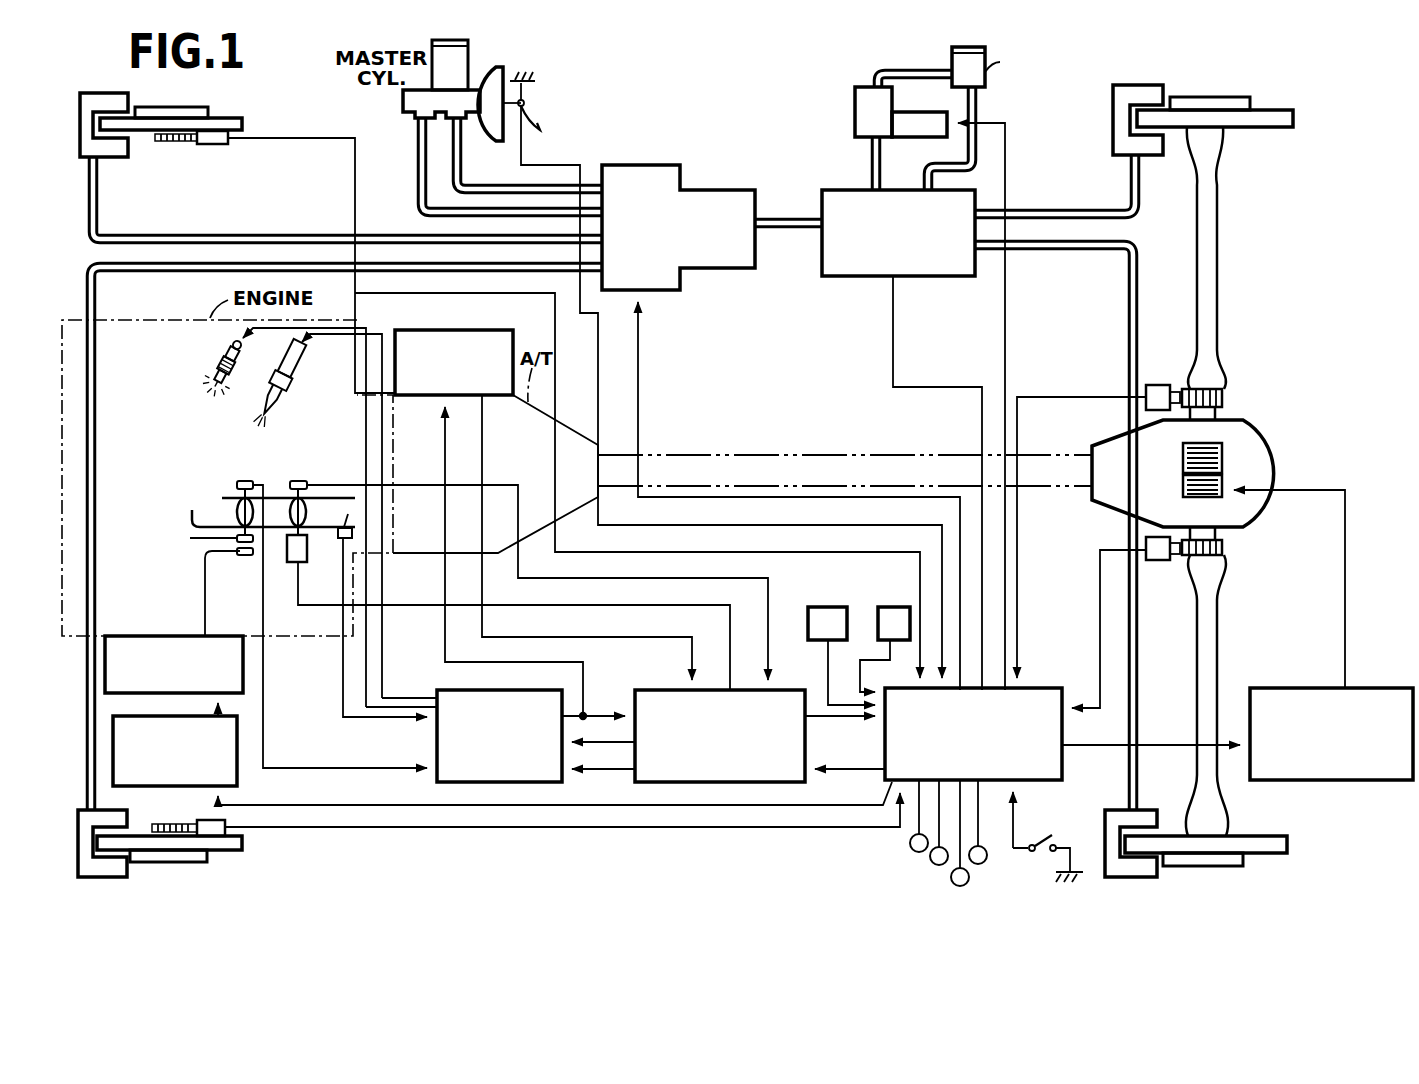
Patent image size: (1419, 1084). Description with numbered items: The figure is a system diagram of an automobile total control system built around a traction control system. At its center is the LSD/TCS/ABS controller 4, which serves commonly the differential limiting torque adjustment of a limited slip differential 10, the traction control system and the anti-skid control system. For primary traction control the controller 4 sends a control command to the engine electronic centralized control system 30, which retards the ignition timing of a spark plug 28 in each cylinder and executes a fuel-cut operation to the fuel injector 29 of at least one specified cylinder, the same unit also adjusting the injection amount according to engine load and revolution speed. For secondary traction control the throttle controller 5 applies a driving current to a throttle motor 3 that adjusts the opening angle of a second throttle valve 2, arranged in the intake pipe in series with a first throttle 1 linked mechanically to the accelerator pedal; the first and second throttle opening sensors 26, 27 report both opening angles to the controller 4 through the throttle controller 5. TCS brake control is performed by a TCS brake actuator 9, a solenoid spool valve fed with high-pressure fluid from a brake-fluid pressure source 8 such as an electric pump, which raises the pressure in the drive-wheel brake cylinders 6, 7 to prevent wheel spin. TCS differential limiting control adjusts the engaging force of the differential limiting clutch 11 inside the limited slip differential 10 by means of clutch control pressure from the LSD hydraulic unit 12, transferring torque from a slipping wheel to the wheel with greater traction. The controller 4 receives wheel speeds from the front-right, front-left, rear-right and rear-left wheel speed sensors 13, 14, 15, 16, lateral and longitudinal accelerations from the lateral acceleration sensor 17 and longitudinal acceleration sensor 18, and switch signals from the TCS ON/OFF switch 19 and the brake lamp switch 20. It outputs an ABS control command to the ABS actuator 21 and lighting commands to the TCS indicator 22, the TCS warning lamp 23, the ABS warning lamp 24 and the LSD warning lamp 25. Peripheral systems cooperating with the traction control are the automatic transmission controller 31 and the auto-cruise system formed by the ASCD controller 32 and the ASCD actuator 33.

The first throttle 1 is at (236, 508).
The second throttle valve 2 is at (316, 510).
The throttle motor 3 is at (293, 564).
The LSD/TCS/ABS controller 4 is at (1074, 732).
The throttle controller 5 is at (676, 680).
The drive-wheel side wheel brake cylinder 6 is at (1113, 128).
The drive-wheel side wheel brake cylinder 7 is at (1135, 878).
The brake-fluid pressure source 8 is at (918, 64).
The TCS brake actuator 9 is at (938, 277).
The limited slip differential 10 is at (1275, 460).
The differential limiting clutch 11 is at (1228, 452).
The LSD hydraulic unit 12 is at (1378, 781).
The front-right wheel speed sensor 13 is at (240, 148).
The front-left wheel speed sensor 14 is at (224, 843).
The rear-right wheel speed sensor 15 is at (1160, 378).
The rear-left wheel speed sensor 16 is at (1160, 562).
The lateral acceleration sensor 17 is at (806, 634).
The longitudinal acceleration sensor 18 is at (874, 634).
The TCS ON/OFF switch 19 is at (1042, 843).
The brake lamp switch 20 is at (536, 101).
The ABS actuator 21 is at (670, 160).
The TCS indicator 22 is at (988, 868).
The TCS warning lamp 23 is at (948, 888).
The ABS warning lamp 24 is at (927, 862).
The LSD warning lamp 25 is at (906, 850).
The first throttle opening sensor 26 is at (258, 476).
The second throttle opening sensor 27 is at (303, 476).
The spark plug 28 is at (228, 362).
The fuel injector 29 is at (301, 361).
The engine electronic centralized control system 30 is at (440, 690).
The automatic transmission controller 31 is at (458, 330).
The ASCD controller 32 is at (237, 774).
The ASCD actuator 33 is at (218, 636).